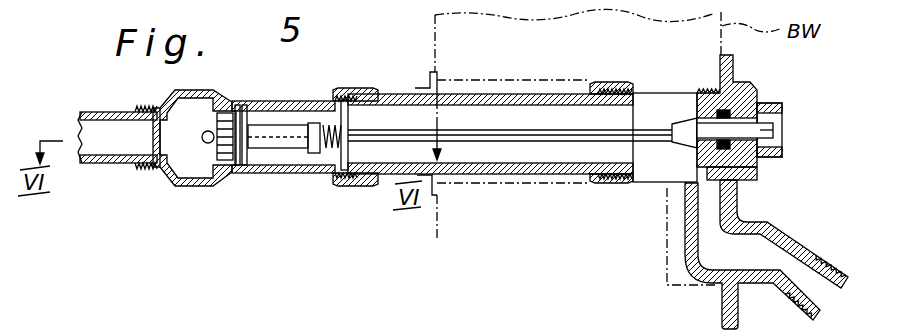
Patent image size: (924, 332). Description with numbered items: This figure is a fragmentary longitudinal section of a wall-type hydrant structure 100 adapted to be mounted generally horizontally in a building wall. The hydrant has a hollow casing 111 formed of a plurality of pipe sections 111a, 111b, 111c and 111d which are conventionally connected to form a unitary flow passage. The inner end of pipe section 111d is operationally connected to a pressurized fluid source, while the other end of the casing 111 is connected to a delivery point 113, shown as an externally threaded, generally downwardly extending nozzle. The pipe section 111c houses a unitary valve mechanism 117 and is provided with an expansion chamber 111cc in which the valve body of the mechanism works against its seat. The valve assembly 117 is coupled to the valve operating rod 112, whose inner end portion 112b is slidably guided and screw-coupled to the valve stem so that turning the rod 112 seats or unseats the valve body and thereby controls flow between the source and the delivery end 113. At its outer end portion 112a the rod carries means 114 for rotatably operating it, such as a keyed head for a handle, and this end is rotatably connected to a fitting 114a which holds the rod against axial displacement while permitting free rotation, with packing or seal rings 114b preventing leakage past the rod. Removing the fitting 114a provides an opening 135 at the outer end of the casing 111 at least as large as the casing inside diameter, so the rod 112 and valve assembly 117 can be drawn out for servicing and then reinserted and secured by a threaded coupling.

The wall-type hydrant structure 100 is at (366, 73).
The hollow casing 111 is at (465, 93).
The pipe section 111a is at (613, 181).
The pipe section 111b is at (472, 174).
The pipe section 111c is at (267, 172).
The expansion chamber 111cc is at (198, 90).
The pipe section 111d is at (101, 165).
The valve operating rod 112 is at (507, 132).
The outer end portion of rod 112a is at (657, 132).
The inner end portion of rod 112b is at (371, 115).
The delivery point 113 is at (847, 232).
The means for rotatably operating rod 114 is at (774, 122).
The fitting 114a is at (745, 84).
The packing or seal rings 114b is at (715, 110).
The unitary valve seat-valve body assembly 117 is at (297, 112).
The opening 135 is at (748, 179).